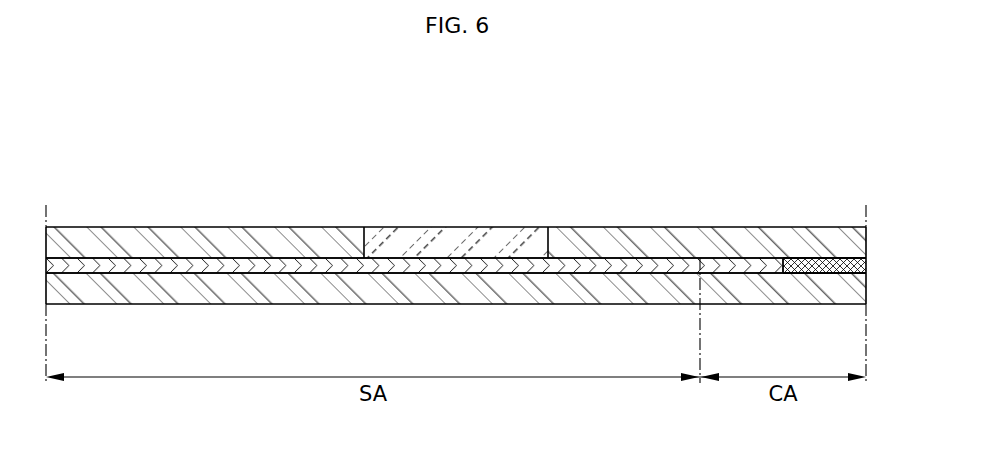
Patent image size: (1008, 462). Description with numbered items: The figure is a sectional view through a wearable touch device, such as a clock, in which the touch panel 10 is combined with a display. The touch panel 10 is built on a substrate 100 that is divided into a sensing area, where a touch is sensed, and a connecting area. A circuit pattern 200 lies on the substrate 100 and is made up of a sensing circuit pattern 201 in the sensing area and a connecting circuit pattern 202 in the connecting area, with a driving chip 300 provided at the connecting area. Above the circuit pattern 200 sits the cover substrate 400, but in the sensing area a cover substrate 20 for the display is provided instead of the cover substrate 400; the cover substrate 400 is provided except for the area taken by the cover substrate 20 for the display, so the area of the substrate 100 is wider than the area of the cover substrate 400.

The touch panel 10 is at (547, 110).
The cover substrate for display 20 is at (450, 244).
The substrate 100 is at (627, 290).
The circuit pattern 200 is at (648, 153).
The sensing circuit pattern 201 is at (665, 264).
The connecting circuit pattern 202 is at (752, 264).
The driving chip 300 is at (822, 264).
The cover substrate 400 is at (456, 190).